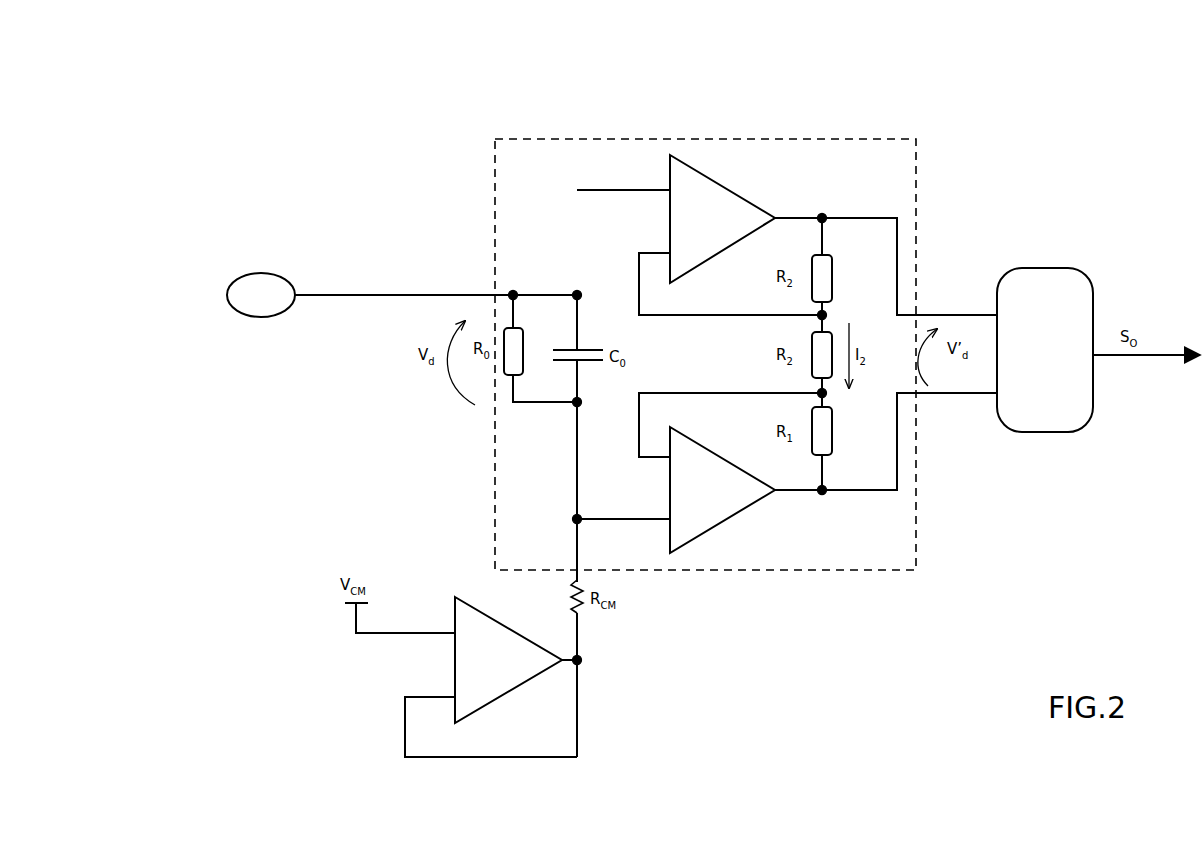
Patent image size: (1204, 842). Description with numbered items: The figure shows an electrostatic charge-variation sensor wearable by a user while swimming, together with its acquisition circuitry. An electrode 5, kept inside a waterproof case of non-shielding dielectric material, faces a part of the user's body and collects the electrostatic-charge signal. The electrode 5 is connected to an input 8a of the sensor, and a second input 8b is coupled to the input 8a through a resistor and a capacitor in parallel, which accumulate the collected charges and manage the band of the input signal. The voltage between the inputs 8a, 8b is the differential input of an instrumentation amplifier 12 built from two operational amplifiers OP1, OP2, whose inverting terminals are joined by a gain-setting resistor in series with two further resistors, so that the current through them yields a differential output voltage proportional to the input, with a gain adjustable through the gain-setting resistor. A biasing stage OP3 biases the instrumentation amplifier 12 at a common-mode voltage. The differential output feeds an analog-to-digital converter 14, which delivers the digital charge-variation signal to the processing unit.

The electrode 5 is at (253, 283).
The input 8a is at (577, 295).
The input 8b is at (577, 402).
The instrumentation amplifier 12 is at (548, 160).
The analog-to-digital converter 14 is at (1045, 293).
The operational amplifier OP1 is at (735, 178).
The operational amplifier OP2 is at (757, 513).
The biasing stage OP3 is at (607, 657).